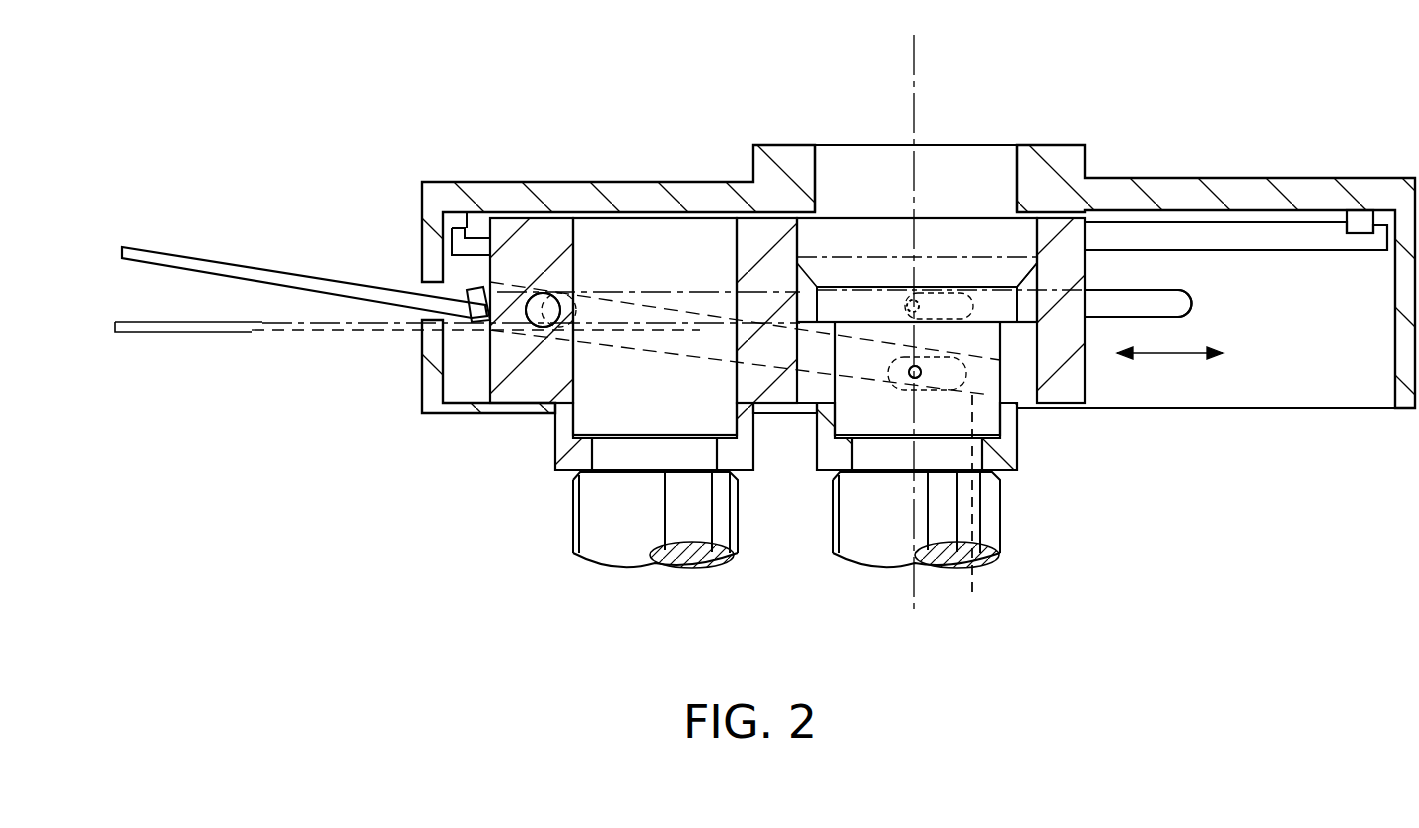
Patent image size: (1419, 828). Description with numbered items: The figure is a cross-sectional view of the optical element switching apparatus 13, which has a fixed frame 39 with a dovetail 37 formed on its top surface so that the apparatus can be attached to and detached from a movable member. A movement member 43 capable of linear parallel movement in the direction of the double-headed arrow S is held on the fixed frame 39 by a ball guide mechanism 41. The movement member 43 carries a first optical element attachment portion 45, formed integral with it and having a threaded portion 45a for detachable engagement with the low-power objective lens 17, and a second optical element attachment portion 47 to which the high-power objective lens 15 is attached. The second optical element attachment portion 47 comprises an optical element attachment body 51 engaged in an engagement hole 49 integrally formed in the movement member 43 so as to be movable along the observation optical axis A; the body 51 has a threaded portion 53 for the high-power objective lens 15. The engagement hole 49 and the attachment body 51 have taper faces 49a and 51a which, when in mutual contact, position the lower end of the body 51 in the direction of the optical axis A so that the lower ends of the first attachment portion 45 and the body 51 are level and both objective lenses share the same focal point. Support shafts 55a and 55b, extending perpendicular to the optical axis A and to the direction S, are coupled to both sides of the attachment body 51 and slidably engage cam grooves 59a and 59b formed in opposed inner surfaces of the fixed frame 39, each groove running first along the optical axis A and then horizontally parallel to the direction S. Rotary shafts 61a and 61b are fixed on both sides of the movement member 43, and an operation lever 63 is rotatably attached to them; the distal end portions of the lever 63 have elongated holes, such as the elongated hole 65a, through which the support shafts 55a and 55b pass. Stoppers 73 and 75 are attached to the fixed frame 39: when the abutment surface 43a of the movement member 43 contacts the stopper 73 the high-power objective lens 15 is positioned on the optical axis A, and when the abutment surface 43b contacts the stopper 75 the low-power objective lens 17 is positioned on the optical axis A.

The optical element switching apparatus 13 is at (1224, 137).
The high-power objective lens 15 is at (1000, 535).
The low-power objective lens 17 is at (573, 532).
The dovetail 37 is at (768, 145).
The fixed frame 39 is at (636, 182).
The ball guide mechanism 41 is at (1278, 222).
The movement member 43 is at (487, 372).
The abutment surface 43a is at (487, 263).
The abutment surface 43b is at (1086, 262).
The first optical element attachment portion 45 is at (555, 440).
The threaded portion 45a is at (594, 440).
The second optical element attachment portion 47 is at (1026, 460).
The engagement hole 49 is at (1000, 338).
The taper face 49a is at (1037, 340).
The optical element attachment body 51 is at (817, 440).
The taper face 51a is at (1037, 273).
The threaded portion 53 is at (845, 473).
The support shaft 55a is at (912, 383).
The support shaft 55b is at (914, 339).
The cam groove 59a is at (1195, 303).
The cam groove 59b is at (1138, 303).
The rotary shaft 61a is at (583, 295).
The rotary shaft 61b is at (543, 310).
The operation lever 63 is at (243, 262).
The elongated hole 65a is at (978, 570).
The stopper 73 is at (478, 230).
The stopper 75 is at (1358, 212).
The observation optical axis A is at (917, 78).
The direction of movement S is at (1170, 367).